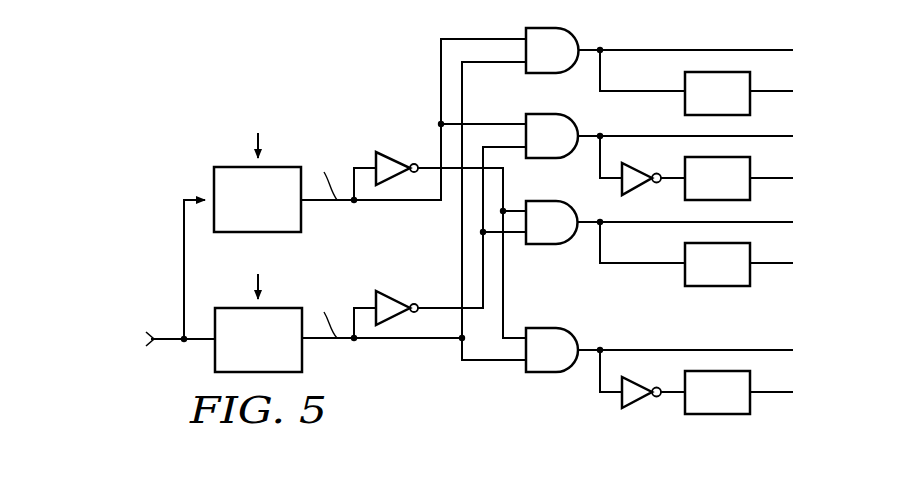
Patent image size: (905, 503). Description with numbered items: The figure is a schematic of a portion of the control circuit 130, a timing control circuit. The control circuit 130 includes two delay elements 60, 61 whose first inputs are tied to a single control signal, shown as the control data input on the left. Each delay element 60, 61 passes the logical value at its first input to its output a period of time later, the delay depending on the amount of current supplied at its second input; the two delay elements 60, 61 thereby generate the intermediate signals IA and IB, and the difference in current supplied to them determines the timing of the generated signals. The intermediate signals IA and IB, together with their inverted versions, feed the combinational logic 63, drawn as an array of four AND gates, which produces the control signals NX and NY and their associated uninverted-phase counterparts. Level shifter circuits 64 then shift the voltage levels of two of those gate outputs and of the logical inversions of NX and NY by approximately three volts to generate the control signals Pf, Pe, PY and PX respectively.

The control circuit 130 is at (293, 56).
The delay element 60 is at (272, 213).
The delay element 61 is at (272, 353).
The combinational logic 63 is at (448, 384).
The level shifter circuits 64 is at (731, 106).